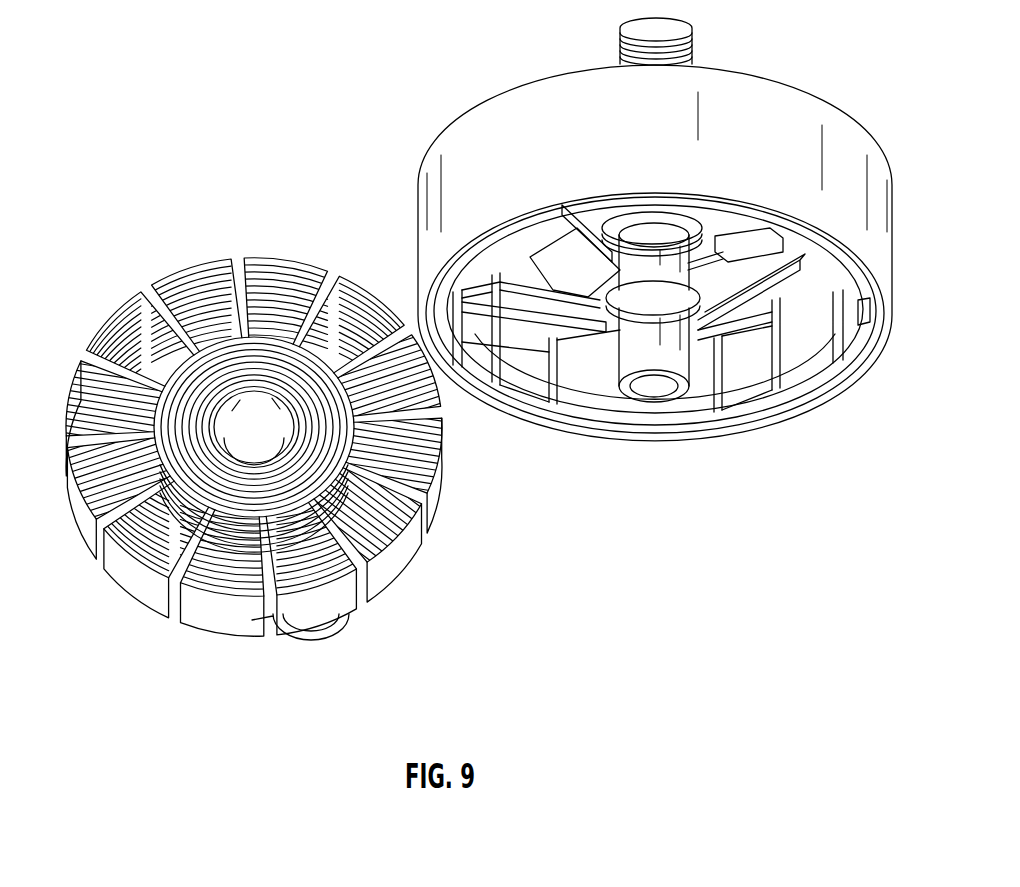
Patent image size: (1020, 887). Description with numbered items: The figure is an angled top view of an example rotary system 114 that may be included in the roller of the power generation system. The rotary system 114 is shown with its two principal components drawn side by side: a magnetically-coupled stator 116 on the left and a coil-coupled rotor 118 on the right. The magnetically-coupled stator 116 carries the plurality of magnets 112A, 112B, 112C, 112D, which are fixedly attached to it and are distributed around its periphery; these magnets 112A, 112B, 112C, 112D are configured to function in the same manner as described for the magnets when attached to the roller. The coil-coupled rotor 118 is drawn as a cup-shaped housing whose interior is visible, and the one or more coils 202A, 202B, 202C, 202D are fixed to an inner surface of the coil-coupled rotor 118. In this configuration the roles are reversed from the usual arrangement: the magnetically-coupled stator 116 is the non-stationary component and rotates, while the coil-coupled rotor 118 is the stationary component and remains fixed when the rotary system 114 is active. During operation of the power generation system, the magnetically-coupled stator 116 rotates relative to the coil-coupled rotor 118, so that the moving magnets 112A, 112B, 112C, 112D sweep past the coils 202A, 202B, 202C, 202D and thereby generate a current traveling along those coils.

The rotary system 114 is at (163, 98).
The magnetically-coupled stator 116 is at (106, 301).
The coil-coupled rotor 118 is at (801, 73).
The magnet 112A is at (100, 403).
The magnet 112B is at (130, 568).
The magnet 112C is at (372, 497).
The magnet 112D is at (283, 292).
The coil 202A is at (470, 338).
The coil 202B is at (742, 393).
The coil 202C is at (802, 238).
The coil 202D is at (562, 214).